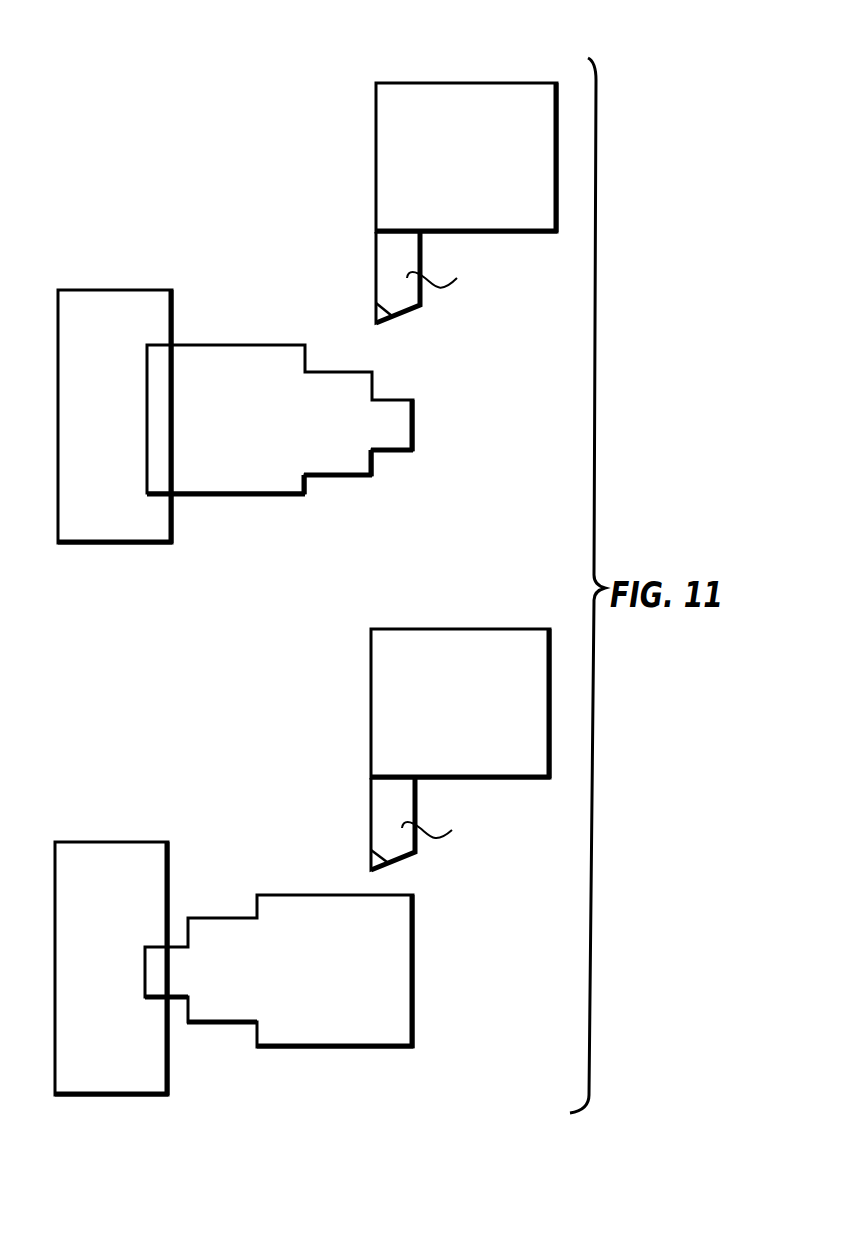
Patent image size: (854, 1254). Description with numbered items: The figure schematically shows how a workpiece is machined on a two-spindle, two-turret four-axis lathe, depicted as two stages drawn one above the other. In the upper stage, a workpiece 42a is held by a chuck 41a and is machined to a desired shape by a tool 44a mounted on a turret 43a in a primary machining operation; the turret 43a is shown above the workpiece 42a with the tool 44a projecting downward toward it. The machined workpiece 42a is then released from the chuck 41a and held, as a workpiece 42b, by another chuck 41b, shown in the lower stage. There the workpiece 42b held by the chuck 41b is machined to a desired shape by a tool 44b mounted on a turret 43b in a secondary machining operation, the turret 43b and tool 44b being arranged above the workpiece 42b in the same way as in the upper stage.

The chuck 41a is at (107, 290).
The workpiece 42a is at (232, 494).
The turret 43a is at (455, 83).
The tool 44a is at (376, 258).
The chuck 41b is at (100, 842).
The workpiece 42b is at (311, 1048).
The turret 43b is at (436, 629).
The tool 44b is at (371, 811).